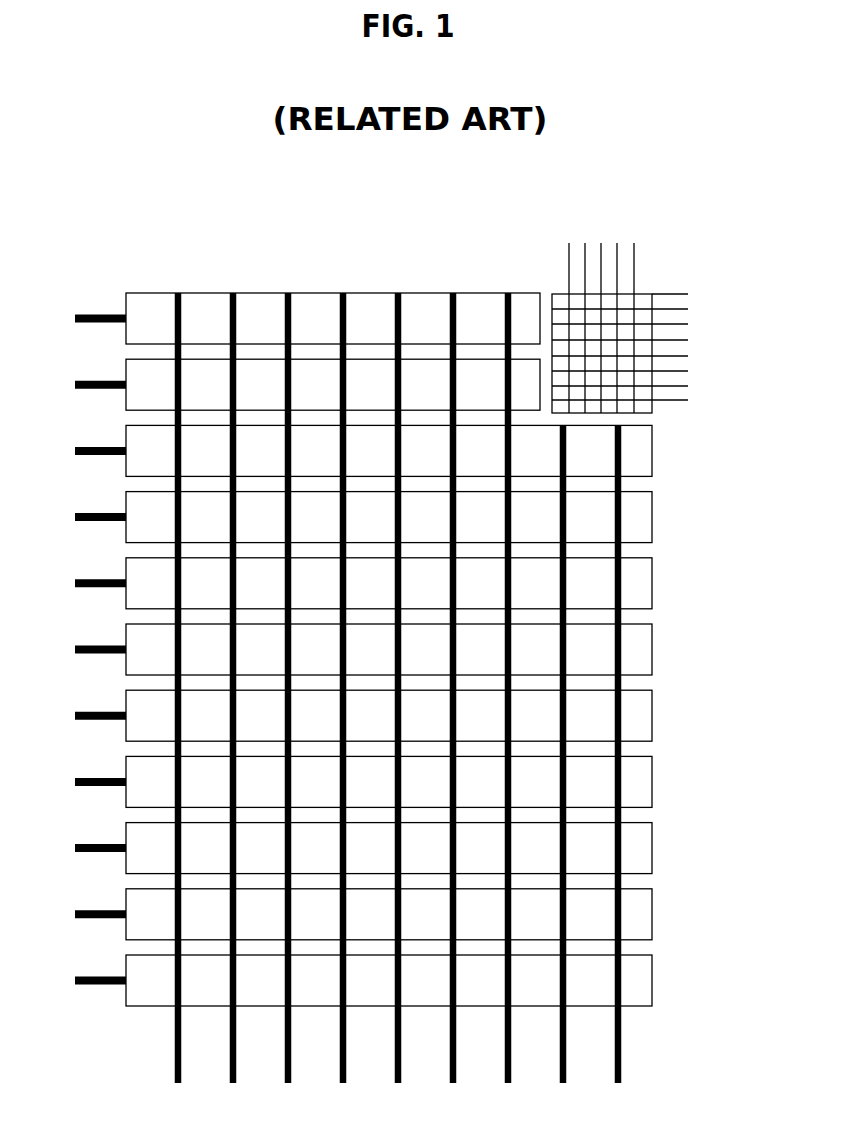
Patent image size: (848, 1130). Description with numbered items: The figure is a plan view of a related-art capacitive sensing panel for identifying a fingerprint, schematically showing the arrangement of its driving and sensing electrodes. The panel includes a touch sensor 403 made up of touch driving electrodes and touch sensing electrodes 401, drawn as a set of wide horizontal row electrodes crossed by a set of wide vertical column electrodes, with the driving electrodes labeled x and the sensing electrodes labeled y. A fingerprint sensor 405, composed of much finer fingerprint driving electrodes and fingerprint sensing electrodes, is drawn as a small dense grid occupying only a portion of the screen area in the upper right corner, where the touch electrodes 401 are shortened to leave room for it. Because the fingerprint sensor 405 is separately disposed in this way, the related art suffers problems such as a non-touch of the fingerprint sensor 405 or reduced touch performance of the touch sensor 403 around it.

The touch driving electrodes and touch sensing electrodes 401 is at (339, 688).
The touch sensor 403 is at (393, 688).
The fingerprint sensor 405 is at (692, 408).